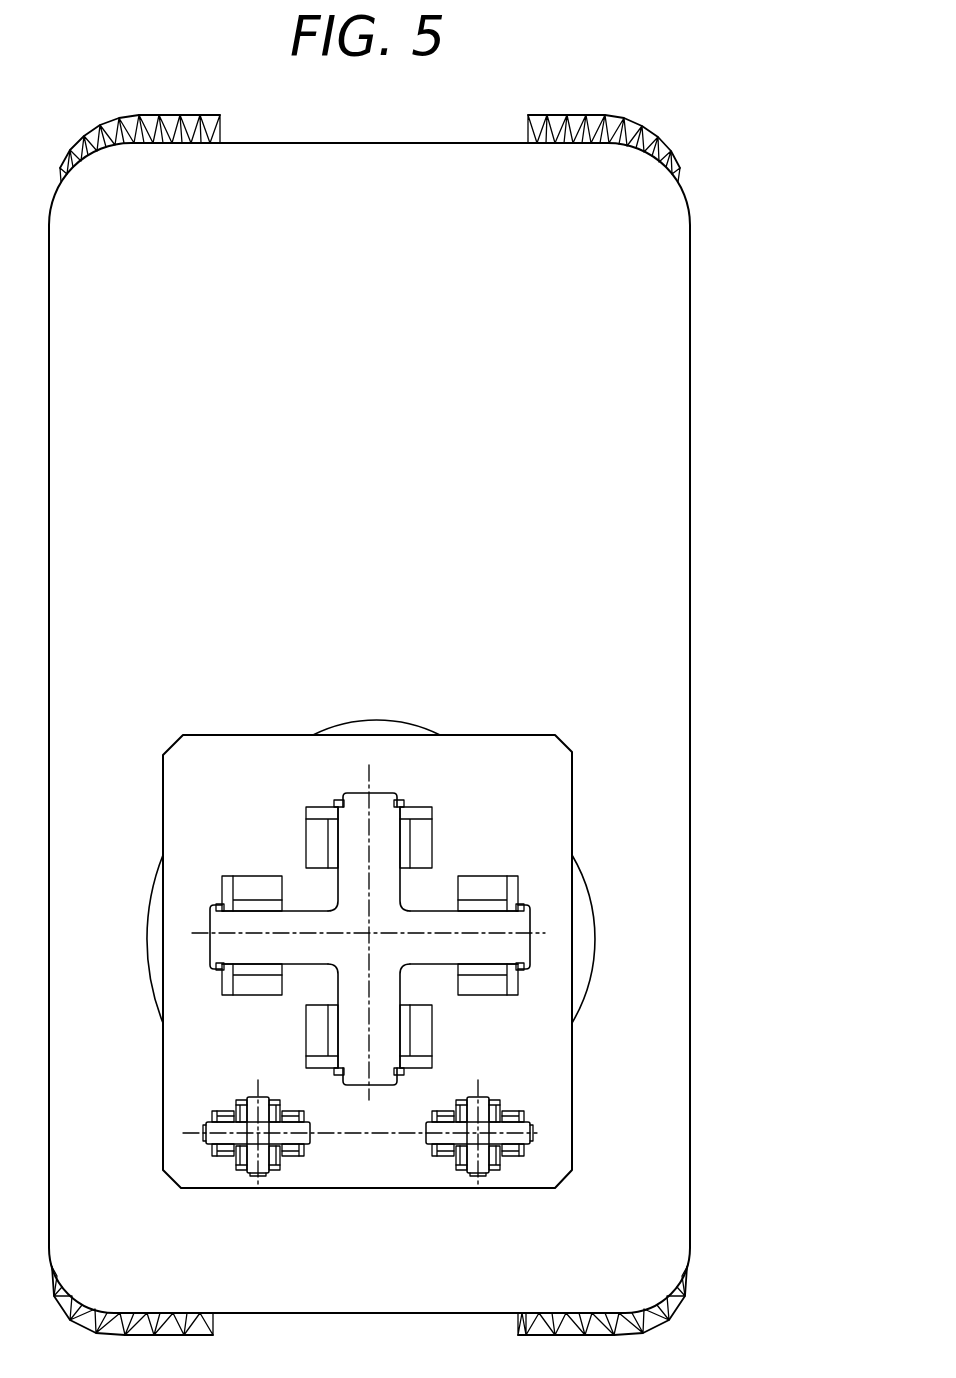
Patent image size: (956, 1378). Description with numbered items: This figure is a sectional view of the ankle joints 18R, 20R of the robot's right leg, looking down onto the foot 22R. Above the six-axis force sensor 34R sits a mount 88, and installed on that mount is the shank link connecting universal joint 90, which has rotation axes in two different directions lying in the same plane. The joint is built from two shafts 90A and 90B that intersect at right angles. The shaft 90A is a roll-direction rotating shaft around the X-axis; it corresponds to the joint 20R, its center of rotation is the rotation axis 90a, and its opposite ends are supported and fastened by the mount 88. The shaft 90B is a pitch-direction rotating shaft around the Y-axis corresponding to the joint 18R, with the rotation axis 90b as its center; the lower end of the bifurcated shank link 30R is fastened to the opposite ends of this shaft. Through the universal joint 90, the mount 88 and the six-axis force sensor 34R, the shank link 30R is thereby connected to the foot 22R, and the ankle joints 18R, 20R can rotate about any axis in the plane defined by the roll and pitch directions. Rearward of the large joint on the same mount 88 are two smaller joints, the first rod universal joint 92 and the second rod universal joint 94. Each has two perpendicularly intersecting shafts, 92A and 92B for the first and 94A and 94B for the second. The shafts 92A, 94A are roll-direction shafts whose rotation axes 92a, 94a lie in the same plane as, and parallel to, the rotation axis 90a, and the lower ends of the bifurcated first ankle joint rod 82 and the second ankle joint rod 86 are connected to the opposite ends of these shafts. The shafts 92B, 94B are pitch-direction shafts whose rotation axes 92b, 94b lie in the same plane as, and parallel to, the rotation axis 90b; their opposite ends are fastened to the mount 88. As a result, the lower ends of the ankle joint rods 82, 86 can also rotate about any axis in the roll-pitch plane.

The foot 22R is at (676, 1237).
The ankle joint 18R is at (392, 905).
The ankle joint 20R is at (523, 722).
The six-axis force sensor 34R is at (371, 722).
The mount 88 is at (197, 735).
The shank link connecting universal joint 90 is at (453, 855).
The shaft 90A is at (346, 800).
The shaft 90B is at (218, 918).
The rotation axis 90a is at (373, 780).
The rotation axis 90b is at (537, 944).
The shank link 30R is at (253, 883).
The first rod universal joint 92 is at (213, 1095).
The shaft 92A is at (275, 1097).
The shaft 92B is at (295, 1147).
The rotation axis 92a is at (258, 1180).
The rotation axis 92b is at (200, 1127).
The first ankle joint rod 82 is at (246, 1100).
The second rod universal joint 94 is at (515, 1094).
The shaft 94A is at (472, 1100).
The shaft 94B is at (532, 1140).
The rotation axis 94a is at (480, 1180).
The rotation axis 94b is at (538, 1133).
The second ankle joint rod 86 is at (492, 1100).